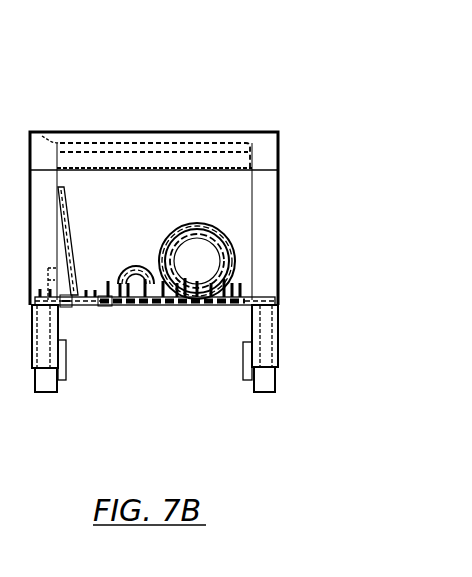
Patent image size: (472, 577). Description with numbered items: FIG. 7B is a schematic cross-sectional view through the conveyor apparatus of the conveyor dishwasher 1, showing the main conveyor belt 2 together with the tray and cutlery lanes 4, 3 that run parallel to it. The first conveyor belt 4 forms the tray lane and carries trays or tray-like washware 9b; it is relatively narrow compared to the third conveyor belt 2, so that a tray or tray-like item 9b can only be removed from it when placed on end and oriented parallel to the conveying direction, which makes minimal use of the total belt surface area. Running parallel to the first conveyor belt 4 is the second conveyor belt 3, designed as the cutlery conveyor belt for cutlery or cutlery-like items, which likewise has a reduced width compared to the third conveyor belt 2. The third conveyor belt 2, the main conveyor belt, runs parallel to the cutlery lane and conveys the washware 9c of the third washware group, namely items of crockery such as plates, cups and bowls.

The conveyor dishwasher 1 is at (165, 148).
The third conveyor belt 2 is at (175, 300).
The second conveyor belt 3 is at (102, 310).
The first conveyor belt 4 is at (68, 305).
The trays and tray-like objects 9b is at (70, 237).
The items of crockery 9c is at (212, 268).